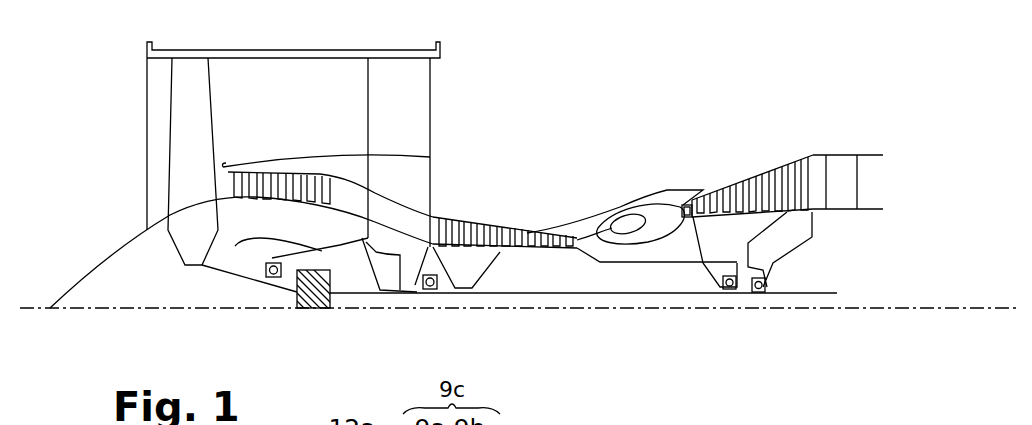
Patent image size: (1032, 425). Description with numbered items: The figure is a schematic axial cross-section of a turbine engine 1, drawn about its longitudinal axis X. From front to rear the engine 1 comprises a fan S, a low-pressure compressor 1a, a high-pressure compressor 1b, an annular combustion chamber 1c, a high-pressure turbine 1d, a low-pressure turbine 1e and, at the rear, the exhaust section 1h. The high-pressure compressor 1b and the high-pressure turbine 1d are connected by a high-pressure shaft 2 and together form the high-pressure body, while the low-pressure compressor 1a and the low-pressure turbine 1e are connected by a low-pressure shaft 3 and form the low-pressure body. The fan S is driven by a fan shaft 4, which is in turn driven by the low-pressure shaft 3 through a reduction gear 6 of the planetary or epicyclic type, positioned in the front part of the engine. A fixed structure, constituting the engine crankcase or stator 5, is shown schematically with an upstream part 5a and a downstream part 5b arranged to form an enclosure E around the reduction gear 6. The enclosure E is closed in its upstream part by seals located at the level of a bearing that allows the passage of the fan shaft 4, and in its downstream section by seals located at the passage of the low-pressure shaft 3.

The turbine engine 1 is at (552, 130).
The low-pressure compressor 1a is at (251, 173).
The high-pressure compressor 1b is at (467, 226).
The annular combustion chamber 1c is at (633, 227).
The high-pressure turbine 1d is at (690, 202).
The low-pressure turbine 1e is at (810, 173).
The exhaust nozzle 1h is at (867, 177).
The high-pressure shaft 2 is at (630, 263).
The low-pressure shaft 3 is at (535, 295).
The fan shaft 4 is at (253, 284).
The stator 5 is at (346, 228).
The upstream part 5a is at (235, 246).
The downstream part 5b is at (399, 292).
The reduction gear 6 is at (308, 308).
The enclosure E is at (345, 257).
The fan S is at (187, 113).
The engine axis X is at (32, 308).